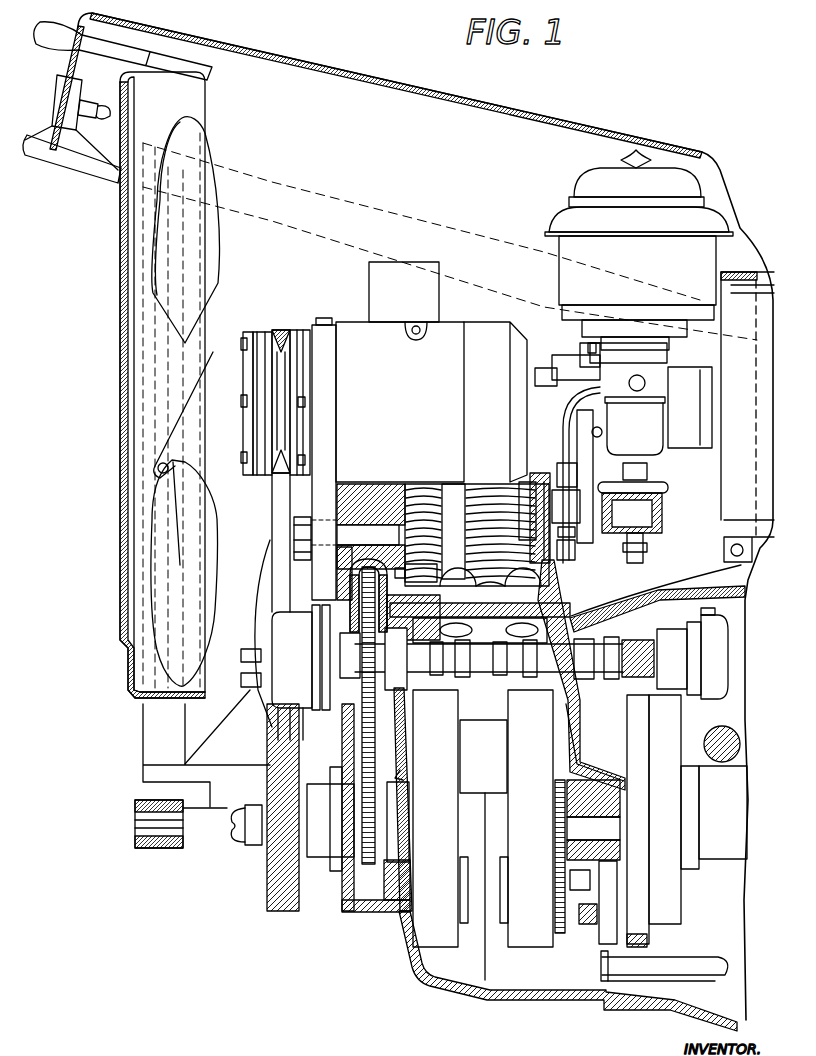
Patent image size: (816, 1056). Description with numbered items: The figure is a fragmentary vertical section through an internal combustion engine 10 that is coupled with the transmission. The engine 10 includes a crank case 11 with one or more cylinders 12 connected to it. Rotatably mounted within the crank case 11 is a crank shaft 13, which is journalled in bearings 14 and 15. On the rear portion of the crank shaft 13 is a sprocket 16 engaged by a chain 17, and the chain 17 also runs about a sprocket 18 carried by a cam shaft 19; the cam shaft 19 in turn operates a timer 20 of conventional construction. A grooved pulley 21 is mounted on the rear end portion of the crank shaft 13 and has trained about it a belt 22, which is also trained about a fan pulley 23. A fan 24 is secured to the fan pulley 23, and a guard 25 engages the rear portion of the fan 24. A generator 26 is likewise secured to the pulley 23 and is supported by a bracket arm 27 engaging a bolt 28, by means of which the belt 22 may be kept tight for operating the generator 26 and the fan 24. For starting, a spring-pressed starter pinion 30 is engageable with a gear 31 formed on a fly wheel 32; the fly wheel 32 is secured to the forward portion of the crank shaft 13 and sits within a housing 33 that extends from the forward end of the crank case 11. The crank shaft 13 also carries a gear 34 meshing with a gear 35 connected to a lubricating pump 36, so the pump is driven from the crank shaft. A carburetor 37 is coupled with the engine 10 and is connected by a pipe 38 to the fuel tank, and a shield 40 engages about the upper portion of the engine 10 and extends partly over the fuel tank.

The internal combustion engine 10 is at (123, 704).
The crank case 11 is at (436, 993).
The cylinder 12 is at (651, 592).
The crank shaft 13 is at (509, 826).
The bearing 14 is at (599, 774).
The bearing 15 is at (405, 774).
The sprocket 16 is at (369, 819).
The chain 17 is at (380, 754).
The sprocket 18 is at (368, 655).
The cam shaft 19 is at (514, 668).
The timer 20 is at (283, 690).
The grooved pulley 21 is at (267, 877).
The belt 22 is at (283, 517).
The fan pulley 23 is at (258, 330).
The fan 24 is at (217, 272).
The guard 25 is at (128, 437).
The generator 26 is at (446, 335).
The bracket arm 27 is at (327, 499).
The bolt 28 is at (375, 535).
The starter pinion 30 is at (670, 639).
The gear 31 is at (642, 692).
The fly wheel 32 is at (637, 729).
The housing 33 is at (671, 1004).
The gear 34 is at (563, 803).
The gear 35 is at (567, 865).
The lubricating pump 36 is at (611, 891).
The carburetor 37 is at (563, 248).
The pipe 38 is at (572, 585).
The shield 40 is at (598, 128).